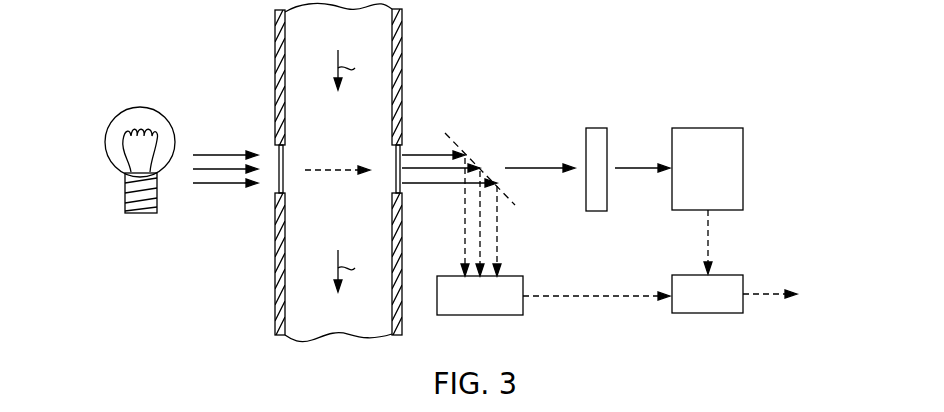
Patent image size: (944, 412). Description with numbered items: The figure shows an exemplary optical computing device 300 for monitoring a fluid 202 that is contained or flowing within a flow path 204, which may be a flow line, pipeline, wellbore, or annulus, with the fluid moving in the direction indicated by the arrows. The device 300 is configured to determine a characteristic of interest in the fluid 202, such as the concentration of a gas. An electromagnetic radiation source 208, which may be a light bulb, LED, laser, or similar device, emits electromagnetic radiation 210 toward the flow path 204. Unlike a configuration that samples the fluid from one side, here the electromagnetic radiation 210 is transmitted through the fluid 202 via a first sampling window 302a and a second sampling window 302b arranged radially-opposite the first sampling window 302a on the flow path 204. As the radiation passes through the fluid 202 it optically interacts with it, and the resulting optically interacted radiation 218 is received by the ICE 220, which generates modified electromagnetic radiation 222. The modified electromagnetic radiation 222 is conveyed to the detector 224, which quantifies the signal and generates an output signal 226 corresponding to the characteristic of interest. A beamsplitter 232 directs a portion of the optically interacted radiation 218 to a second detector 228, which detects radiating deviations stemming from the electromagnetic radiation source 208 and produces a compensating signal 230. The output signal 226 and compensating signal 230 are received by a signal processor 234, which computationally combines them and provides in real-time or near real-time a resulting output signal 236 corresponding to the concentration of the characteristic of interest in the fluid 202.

The fluid 202 is at (354, 142).
The flow path 204 is at (402, 33).
The electromagnetic radiation source 208 is at (122, 118).
The electromagnetic radiation 210 is at (222, 148).
The optically interacted radiation 218 is at (427, 152).
The ICE 220 is at (598, 129).
The modified electromagnetic radiation 222 is at (633, 166).
The detector 224 is at (724, 180).
The output signal 226 is at (708, 237).
The second detector 228 is at (496, 307).
The compensating signal 230 is at (553, 297).
The beamsplitter 232 is at (452, 137).
The signal processor 234 is at (724, 306).
The resulting output signal 236 is at (770, 293).
The optical computing device 300 is at (553, 76).
The first sampling window 302a is at (275, 190).
The second sampling window 302b is at (402, 193).